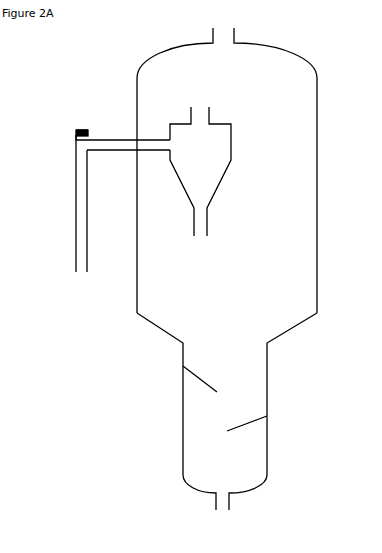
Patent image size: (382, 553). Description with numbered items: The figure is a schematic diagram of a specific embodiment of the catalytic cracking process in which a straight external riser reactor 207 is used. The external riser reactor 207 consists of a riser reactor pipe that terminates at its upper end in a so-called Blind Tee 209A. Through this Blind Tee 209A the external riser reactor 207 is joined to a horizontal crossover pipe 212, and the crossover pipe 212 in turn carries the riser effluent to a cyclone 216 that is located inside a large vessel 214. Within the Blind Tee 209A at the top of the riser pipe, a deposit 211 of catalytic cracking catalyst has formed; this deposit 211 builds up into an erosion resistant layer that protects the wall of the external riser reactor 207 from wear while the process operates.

The external riser reactor 207 is at (87, 232).
The Blind Tee 209A is at (76, 134).
The deposit of catalytic cracking catalyst 211 is at (78, 130).
The crossover pipe 212 is at (114, 138).
The vessel 214 is at (317, 233).
The cyclone 216 is at (221, 181).